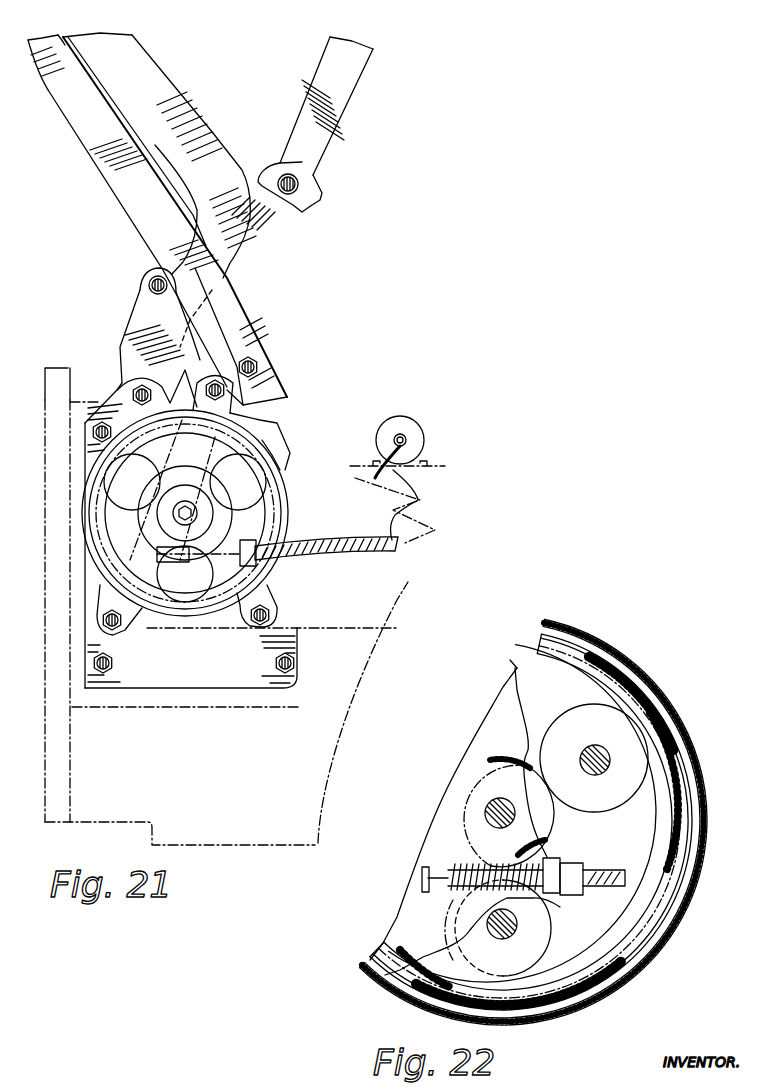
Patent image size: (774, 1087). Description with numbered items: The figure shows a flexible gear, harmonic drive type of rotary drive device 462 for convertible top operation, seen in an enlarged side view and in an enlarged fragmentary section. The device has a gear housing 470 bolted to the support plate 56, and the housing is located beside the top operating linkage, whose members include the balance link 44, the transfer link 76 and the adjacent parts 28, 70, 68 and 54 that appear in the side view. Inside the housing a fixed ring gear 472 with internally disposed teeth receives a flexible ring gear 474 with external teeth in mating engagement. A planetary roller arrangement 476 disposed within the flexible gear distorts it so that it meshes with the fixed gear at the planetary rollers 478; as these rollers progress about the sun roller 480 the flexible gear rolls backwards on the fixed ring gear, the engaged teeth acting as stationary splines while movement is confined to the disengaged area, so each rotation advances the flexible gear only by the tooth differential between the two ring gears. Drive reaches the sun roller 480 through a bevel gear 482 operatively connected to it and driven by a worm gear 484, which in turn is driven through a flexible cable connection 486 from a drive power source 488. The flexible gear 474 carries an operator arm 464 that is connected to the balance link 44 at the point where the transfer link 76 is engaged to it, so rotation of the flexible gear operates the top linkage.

In FIG. 21, the arm strip 70 is at (77, 110).
In FIG. 21, the arm 28 is at (207, 147).
In FIG. 21, the balance link 44 is at (122, 207).
In FIG. 21, the transfer link 76 is at (163, 310).
In FIG. 21, the bracket 68 is at (270, 405).
In FIG. 21, the operator arm 464 is at (262, 430).
In FIG. 21, the gear housing 470 is at (283, 513).
In FIG. 22, the gear housing 470 is at (703, 797).
In FIG. 21, the drive power source 488 is at (413, 438).
In FIG. 21, the flexible cable connection 486 is at (392, 512).
In FIG. 21, the rotary drive device 462 is at (188, 628).
In FIG. 21, the support plate 56 is at (263, 677).
In FIG. 21, the channel member 54 is at (80, 775).
In FIG. 22, the planetary rollers 478 is at (573, 723).
In FIG. 22, the planetary roller arrangement 476 is at (648, 741).
In FIG. 22, the bevel gear 482 is at (460, 788).
In FIG. 22, the sun roller 480 is at (542, 820).
In FIG. 22, the worm gear 484 is at (443, 862).
In FIG. 22, the flexible ring gear 474 is at (660, 850).
In FIG. 22, the fixed ring gear 472 is at (663, 923).